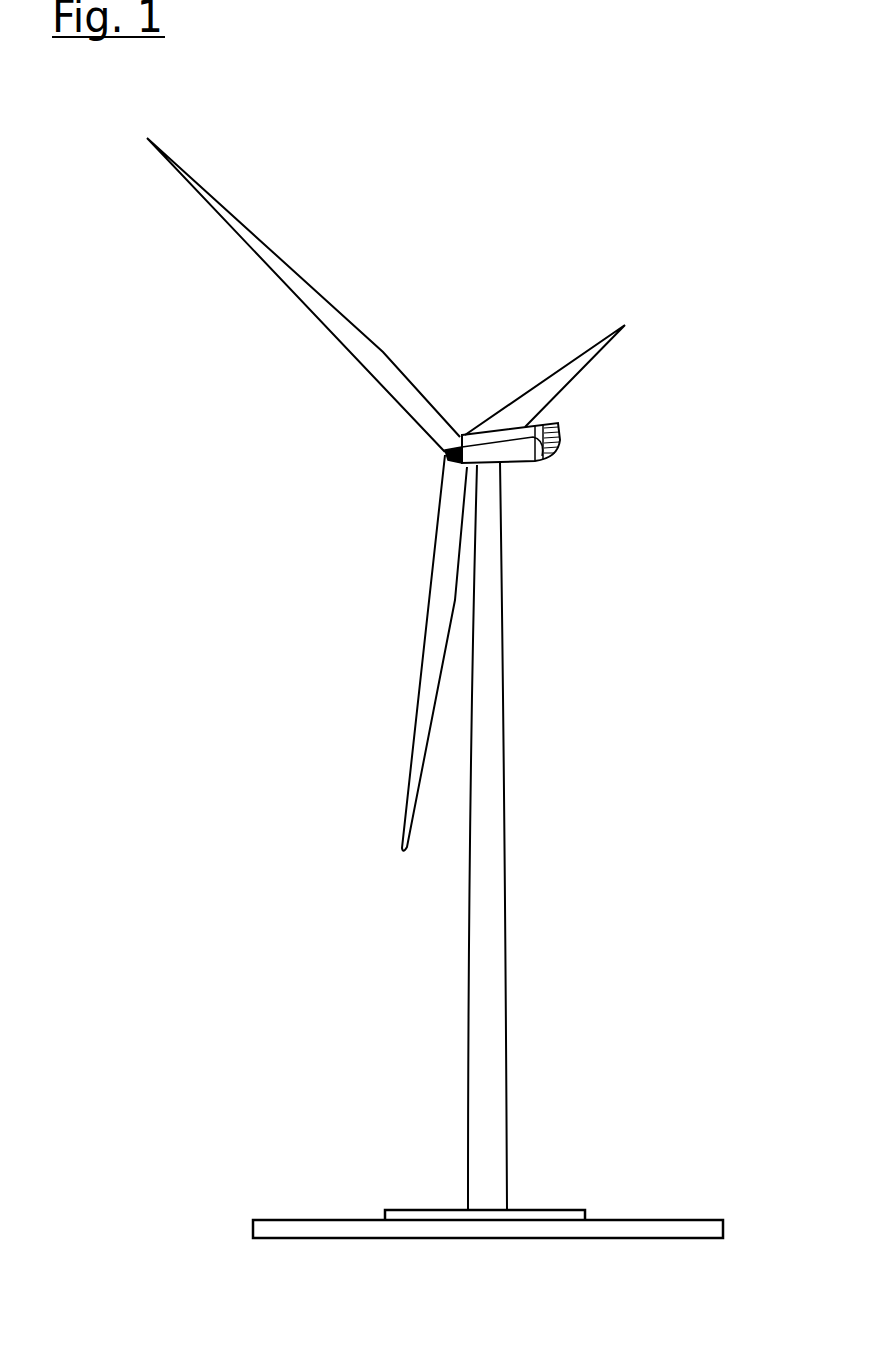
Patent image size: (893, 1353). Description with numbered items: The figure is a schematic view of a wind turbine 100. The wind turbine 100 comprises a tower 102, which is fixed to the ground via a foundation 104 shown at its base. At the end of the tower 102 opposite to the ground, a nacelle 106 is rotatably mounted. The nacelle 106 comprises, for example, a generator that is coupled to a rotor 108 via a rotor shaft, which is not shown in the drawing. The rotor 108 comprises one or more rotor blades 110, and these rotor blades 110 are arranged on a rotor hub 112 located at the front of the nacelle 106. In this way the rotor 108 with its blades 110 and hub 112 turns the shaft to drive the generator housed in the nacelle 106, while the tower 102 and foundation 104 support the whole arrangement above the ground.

The wind turbine 100 is at (588, 725).
The tower 102 is at (487, 927).
The foundation 104 is at (590, 1228).
The nacelle 106 is at (518, 462).
The rotor 108 is at (467, 368).
The rotor blade 110 is at (333, 335).
The rotor hub 112 is at (448, 460).